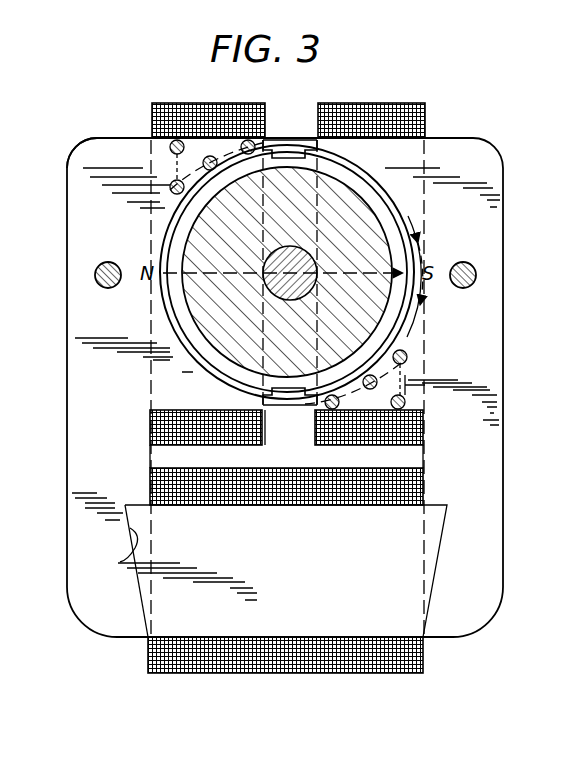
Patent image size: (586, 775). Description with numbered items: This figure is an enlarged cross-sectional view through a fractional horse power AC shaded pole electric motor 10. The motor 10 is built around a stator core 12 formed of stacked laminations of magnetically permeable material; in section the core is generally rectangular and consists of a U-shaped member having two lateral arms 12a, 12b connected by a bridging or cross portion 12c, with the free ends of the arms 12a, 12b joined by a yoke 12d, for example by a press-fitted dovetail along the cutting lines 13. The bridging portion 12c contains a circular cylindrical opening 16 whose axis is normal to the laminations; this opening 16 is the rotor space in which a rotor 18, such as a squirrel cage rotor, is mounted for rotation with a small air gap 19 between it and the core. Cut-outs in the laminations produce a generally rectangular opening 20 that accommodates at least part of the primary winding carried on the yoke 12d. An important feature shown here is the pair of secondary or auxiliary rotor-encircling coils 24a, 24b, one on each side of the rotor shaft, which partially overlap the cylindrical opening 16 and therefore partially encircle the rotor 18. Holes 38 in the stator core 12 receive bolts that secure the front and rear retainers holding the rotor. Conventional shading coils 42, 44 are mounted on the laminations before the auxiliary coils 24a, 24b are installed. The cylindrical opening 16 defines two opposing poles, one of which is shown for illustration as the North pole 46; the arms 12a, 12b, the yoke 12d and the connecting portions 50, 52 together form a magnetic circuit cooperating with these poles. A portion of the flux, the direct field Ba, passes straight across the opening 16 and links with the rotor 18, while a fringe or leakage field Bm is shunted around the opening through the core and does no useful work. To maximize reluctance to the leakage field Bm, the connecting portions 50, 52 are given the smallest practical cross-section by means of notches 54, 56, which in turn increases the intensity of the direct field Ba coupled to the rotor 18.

The AC shaded pole electric motor 10 is at (78, 144).
The stator core 12 is at (60, 413).
The arm 12a is at (120, 451).
The arm 12b is at (470, 452).
The bridging portion 12c is at (95, 334).
The yoke 12d is at (325, 596).
The cutting lines 13 is at (140, 540).
The cylindrical opening 16 is at (380, 194).
The rotor 18 is at (192, 315).
The air gap 19 is at (195, 352).
The rectangular opening 20 is at (150, 420).
The auxiliary coil 24a is at (378, 118).
The auxiliary coil 24b is at (165, 103).
The holes 38 is at (95, 278).
The shading coil 42 is at (211, 158).
The shading coil 44 is at (371, 389).
The North pole 46 is at (130, 256).
The connecting portion 50 is at (274, 143).
The connecting portion 52 is at (280, 400).
The notch 54 is at (298, 150).
The notch 56 is at (266, 428).
The direct magnetic field Ba is at (418, 306).
The fringe flux Bm is at (408, 216).